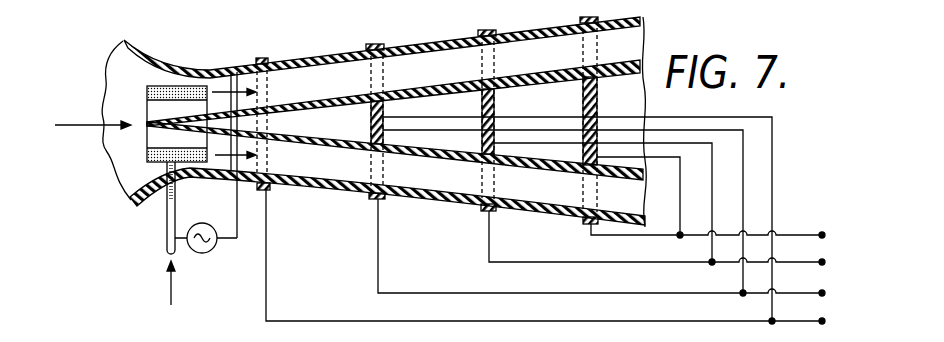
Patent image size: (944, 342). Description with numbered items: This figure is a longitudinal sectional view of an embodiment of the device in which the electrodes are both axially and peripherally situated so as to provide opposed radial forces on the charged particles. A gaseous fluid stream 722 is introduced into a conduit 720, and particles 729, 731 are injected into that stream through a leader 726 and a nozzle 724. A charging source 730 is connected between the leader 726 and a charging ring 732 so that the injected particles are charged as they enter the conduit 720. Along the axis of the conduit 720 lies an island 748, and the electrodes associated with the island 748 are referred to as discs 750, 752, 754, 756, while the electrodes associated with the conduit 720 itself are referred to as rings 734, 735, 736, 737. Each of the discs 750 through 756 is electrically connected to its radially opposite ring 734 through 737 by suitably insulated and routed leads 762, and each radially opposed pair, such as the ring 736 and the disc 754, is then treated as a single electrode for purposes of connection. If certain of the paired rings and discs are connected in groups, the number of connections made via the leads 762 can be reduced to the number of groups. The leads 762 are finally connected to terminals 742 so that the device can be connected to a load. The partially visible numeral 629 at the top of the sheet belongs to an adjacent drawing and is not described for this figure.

The conduit 720 is at (648, 14).
The gaseous fluid stream 722 is at (78, 123).
The nozzle 724 is at (177, 71).
The leader 726 is at (166, 228).
The particles 729 is at (174, 288).
The charging source 730 is at (203, 254).
The particles 731 is at (263, 96).
The charging ring 732 is at (240, 68).
The ring 734 is at (269, 197).
The ring 735 is at (384, 199).
The ring 736 is at (493, 210).
The ring 737 is at (587, 222).
The terminals 742 is at (826, 236).
The island 748 is at (645, 68).
The disc 750 is at (307, 95).
The disc 752 is at (385, 104).
The disc 754 is at (505, 101).
The disc 756 is at (584, 92).
The leads 762 is at (683, 168).
The adjacent figure numeral 629 is at (172, 0).